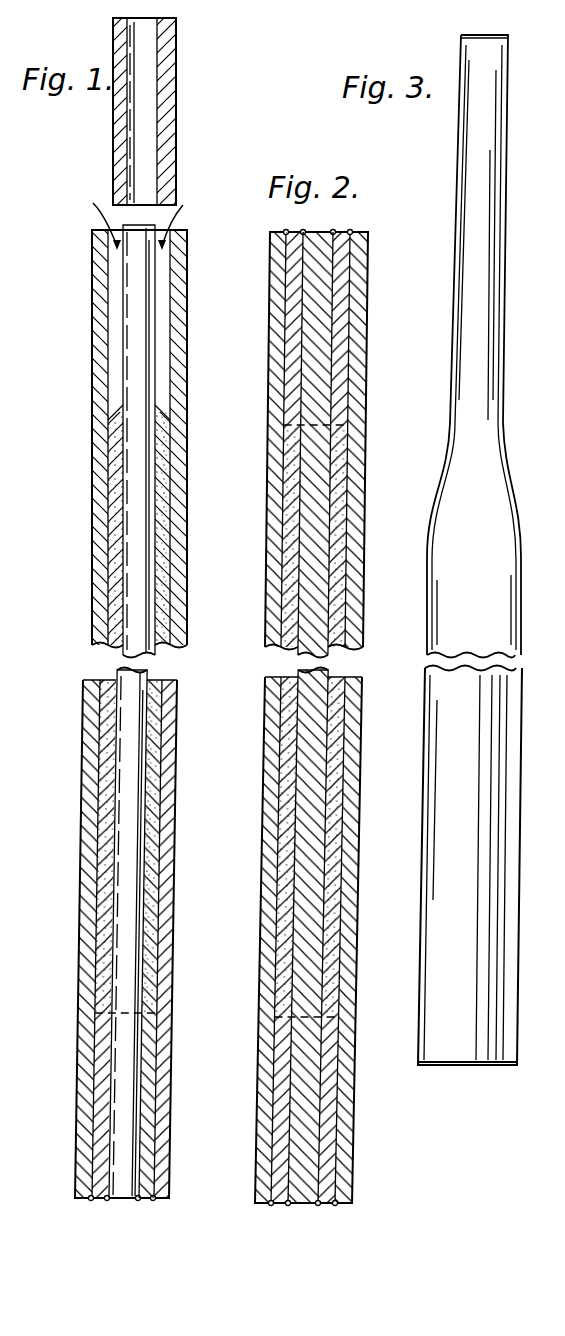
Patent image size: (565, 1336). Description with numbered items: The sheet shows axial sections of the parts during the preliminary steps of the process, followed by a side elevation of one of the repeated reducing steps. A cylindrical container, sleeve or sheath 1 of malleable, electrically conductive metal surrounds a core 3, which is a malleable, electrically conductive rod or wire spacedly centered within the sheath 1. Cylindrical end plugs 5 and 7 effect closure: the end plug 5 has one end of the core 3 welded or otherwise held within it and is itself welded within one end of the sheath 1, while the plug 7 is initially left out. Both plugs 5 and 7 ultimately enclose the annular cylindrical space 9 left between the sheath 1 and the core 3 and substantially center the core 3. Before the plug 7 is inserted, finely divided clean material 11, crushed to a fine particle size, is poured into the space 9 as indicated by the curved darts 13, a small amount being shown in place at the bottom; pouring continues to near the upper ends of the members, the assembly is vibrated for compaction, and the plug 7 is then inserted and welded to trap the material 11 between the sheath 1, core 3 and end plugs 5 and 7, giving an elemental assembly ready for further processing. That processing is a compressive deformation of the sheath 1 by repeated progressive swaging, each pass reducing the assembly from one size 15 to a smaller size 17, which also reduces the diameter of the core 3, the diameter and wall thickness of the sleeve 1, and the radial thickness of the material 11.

In FIG. 1, the cylindrical container, sleeve or sheath 1 is at (99, 411).
In FIG. 2, the cylindrical container, sleeve or sheath 1 is at (272, 422).
In FIG. 1, the core 3 is at (125, 823).
In FIG. 2, the core 3 is at (312, 627).
In FIG. 1, the end plug 5 is at (148, 1072).
In FIG. 2, the end plug 5 is at (283, 1124).
In FIG. 1, the end plug 7 is at (175, 94).
In FIG. 2, the end plug 7 is at (292, 313).
In FIG. 1, the annular cylindrical space 9 is at (110, 318).
In FIG. 1, the finely divided clean material 11 is at (143, 920).
In FIG. 2, the finely divided clean material 11 is at (288, 543).
In FIG. 1, the curved darts 13 is at (93, 203).
In FIG. 3, the one size 15 is at (476, 818).
In FIG. 3, the reduced size 17 is at (481, 279).